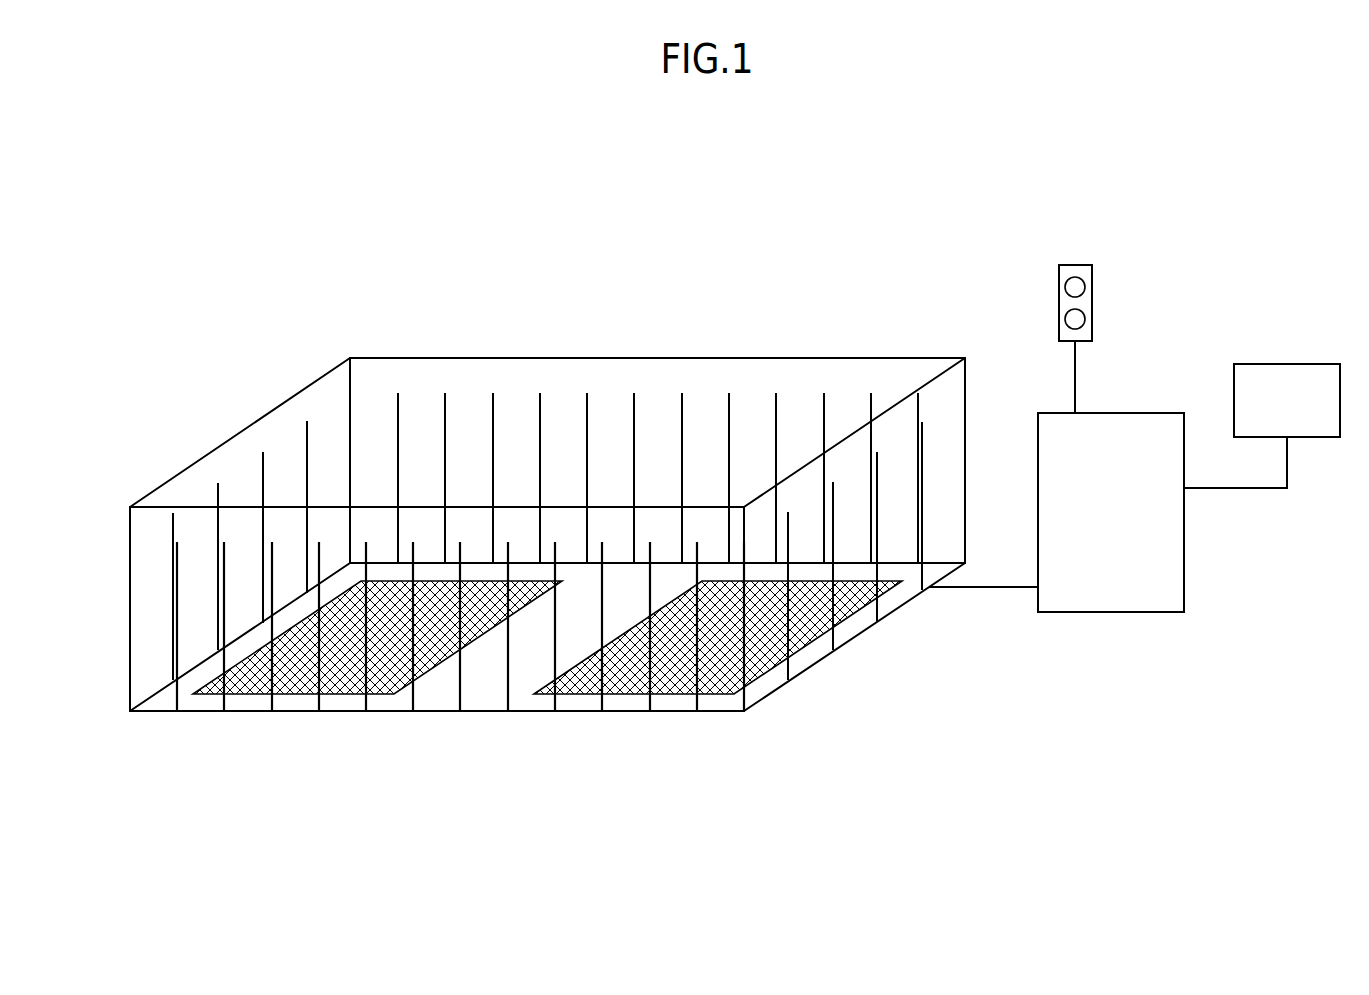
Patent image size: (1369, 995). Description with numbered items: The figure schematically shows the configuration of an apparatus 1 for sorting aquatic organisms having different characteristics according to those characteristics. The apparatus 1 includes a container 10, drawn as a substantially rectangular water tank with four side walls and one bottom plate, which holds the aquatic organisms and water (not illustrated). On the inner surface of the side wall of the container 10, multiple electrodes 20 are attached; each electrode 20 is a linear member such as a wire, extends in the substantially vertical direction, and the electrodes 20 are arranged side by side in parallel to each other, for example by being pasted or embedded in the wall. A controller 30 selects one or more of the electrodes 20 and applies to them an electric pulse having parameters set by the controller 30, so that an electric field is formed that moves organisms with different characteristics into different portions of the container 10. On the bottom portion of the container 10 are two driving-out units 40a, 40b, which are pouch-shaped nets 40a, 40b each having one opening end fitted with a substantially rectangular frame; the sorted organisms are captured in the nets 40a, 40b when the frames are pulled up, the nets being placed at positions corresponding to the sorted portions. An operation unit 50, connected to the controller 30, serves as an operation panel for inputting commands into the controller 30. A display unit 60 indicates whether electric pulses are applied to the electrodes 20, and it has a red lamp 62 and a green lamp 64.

The apparatus 1 is at (157, 186).
The container 10 is at (421, 357).
The electrodes 20 is at (263, 482).
The controller 30 is at (1147, 413).
The driving-out unit 40a is at (341, 697).
The driving-out unit 40b is at (581, 694).
The operation unit 50 is at (1286, 364).
The display unit 60 is at (1074, 265).
The red lamp 62 is at (1090, 287).
The green lamp 64 is at (1090, 319).